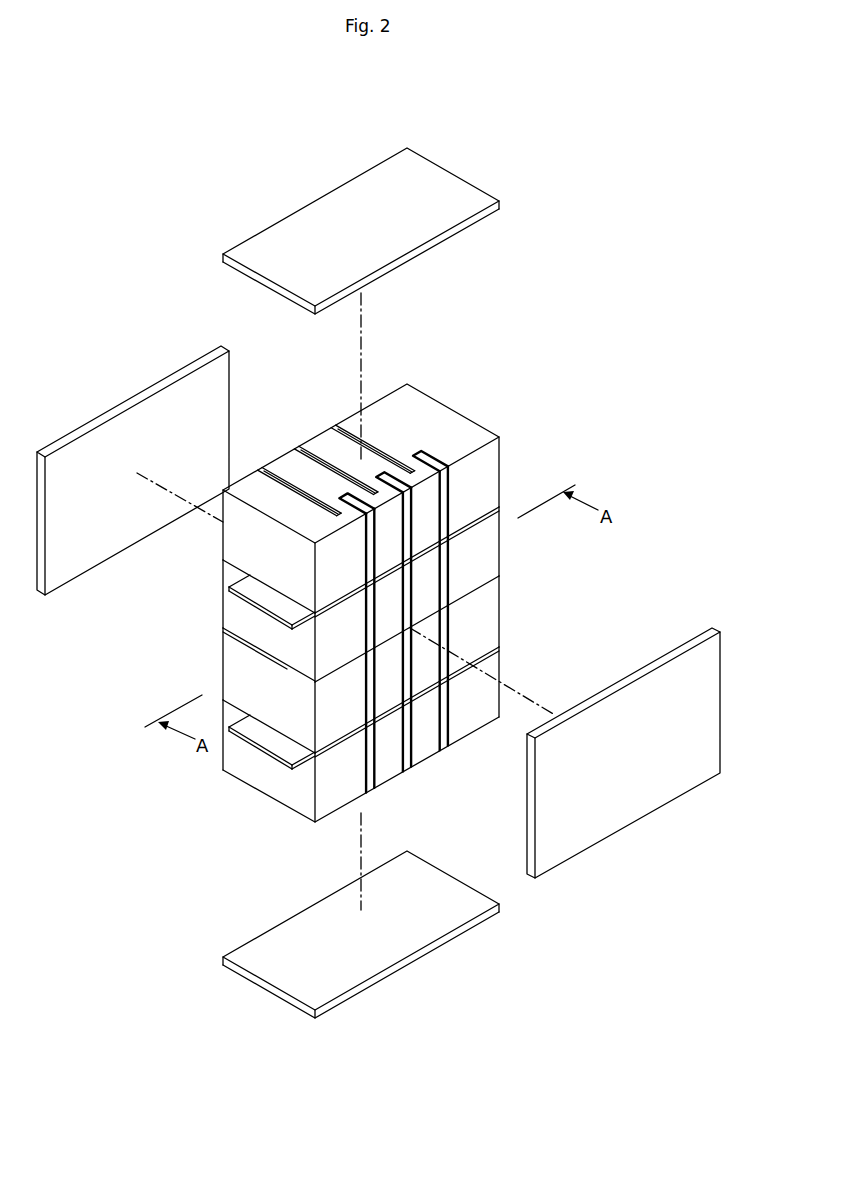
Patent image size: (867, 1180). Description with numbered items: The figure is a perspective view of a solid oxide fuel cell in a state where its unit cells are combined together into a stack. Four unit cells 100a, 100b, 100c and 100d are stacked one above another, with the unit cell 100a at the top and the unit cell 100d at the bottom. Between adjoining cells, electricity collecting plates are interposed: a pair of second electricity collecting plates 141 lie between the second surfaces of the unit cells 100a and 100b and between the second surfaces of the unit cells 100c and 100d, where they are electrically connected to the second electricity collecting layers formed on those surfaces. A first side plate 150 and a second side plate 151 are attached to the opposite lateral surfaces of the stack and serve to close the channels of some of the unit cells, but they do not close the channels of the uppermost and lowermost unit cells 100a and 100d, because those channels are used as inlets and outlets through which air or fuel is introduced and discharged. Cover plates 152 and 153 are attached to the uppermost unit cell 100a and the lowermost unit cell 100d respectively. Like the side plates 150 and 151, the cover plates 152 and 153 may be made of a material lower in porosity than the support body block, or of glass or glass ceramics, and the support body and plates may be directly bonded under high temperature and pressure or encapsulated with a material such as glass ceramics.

The unit cell 100a is at (514, 436).
The unit cell 100b is at (205, 594).
The unit cell 100c is at (514, 602).
The unit cell 100d is at (232, 789).
The second electricity collecting plate 141 is at (243, 588).
The first side plate 150 is at (97, 453).
The second side plate 151 is at (592, 824).
The cover plate 152 is at (312, 228).
The cover plate 153 is at (263, 952).